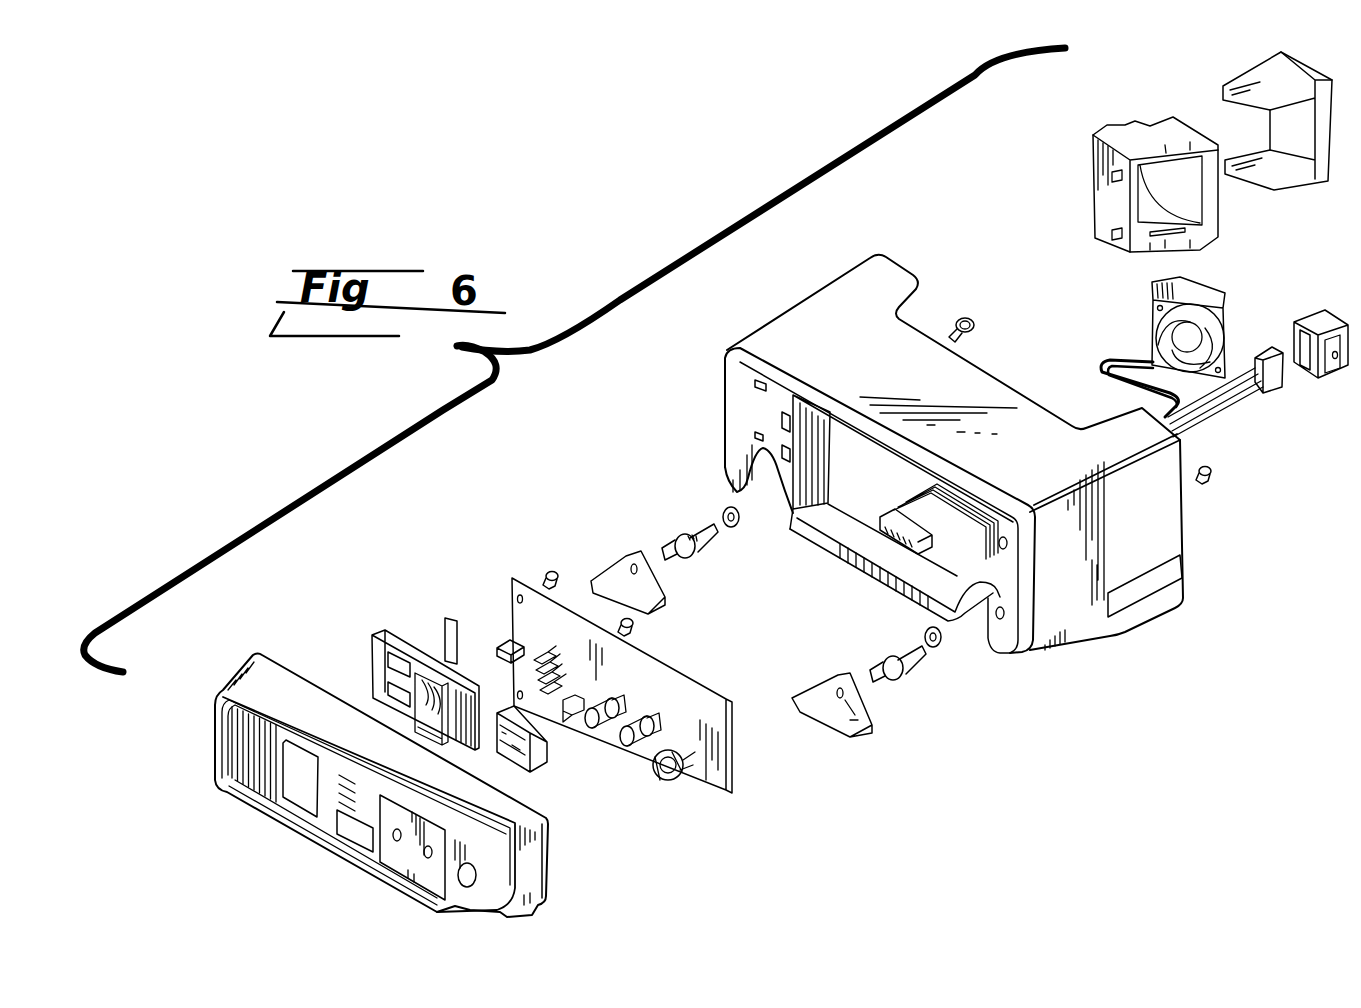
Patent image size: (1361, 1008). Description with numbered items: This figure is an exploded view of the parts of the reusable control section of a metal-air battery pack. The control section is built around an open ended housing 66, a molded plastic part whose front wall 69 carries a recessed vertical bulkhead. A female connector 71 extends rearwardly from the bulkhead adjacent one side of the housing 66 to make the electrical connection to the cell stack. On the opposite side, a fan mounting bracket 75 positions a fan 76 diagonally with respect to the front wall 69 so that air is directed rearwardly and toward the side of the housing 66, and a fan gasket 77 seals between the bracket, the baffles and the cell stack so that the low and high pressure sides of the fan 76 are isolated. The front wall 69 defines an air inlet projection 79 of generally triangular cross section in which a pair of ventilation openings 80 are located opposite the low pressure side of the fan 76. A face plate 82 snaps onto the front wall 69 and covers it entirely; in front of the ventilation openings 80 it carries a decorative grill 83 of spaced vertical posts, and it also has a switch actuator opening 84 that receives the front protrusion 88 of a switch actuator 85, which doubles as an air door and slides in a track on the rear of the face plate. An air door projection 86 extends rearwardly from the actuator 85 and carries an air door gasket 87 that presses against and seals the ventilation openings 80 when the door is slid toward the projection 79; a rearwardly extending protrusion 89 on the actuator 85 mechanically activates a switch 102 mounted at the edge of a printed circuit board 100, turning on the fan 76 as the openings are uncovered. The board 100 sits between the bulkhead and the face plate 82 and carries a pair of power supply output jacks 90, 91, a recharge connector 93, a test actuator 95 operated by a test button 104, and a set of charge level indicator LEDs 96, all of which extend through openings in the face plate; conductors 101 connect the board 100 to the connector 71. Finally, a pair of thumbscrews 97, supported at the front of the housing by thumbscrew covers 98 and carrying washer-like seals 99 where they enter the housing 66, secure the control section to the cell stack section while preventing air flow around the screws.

The housing 66 is at (837, 304).
The front wall 69 is at (743, 407).
The female connector 71 is at (1318, 318).
The fan mounting bracket 75 is at (1178, 138).
The fan 76 is at (1200, 293).
The fan gasket 77 is at (1285, 88).
The air inlet projection 79 is at (735, 432).
The ventilation openings 80 is at (777, 416).
The face plate 82 is at (530, 869).
The decorative grill 83 is at (237, 752).
The switch actuator opening 84 is at (295, 808).
The switch actuator 85 is at (368, 665).
The air door projection 86 is at (430, 650).
The air door gasket 87 is at (437, 654).
The front protrusion 88 is at (457, 750).
The rearwardly extending protrusion 89 is at (431, 654).
The power supply output jack 90 is at (601, 695).
The power supply output jack 91 is at (641, 748).
The recharge connector 93 is at (668, 782).
The test actuator 95 is at (578, 715).
The charge level indicator LEDs 96 is at (540, 648).
The thumbscrews 97 is at (705, 550).
The thumbscrew covers 98 is at (631, 552).
The washer-like seals 99 is at (720, 507).
The printed circuit board 100 is at (695, 682).
The conductors 101 is at (1242, 405).
The switch 102 is at (500, 640).
The test button 104 is at (519, 774).